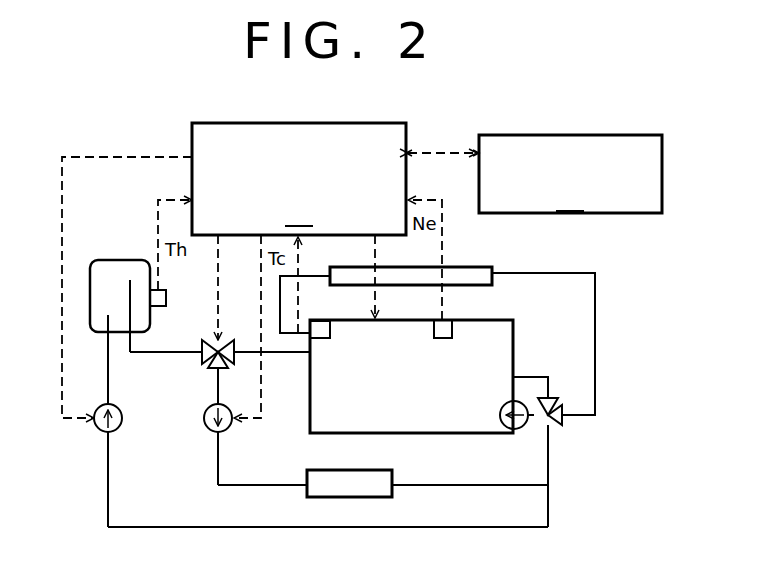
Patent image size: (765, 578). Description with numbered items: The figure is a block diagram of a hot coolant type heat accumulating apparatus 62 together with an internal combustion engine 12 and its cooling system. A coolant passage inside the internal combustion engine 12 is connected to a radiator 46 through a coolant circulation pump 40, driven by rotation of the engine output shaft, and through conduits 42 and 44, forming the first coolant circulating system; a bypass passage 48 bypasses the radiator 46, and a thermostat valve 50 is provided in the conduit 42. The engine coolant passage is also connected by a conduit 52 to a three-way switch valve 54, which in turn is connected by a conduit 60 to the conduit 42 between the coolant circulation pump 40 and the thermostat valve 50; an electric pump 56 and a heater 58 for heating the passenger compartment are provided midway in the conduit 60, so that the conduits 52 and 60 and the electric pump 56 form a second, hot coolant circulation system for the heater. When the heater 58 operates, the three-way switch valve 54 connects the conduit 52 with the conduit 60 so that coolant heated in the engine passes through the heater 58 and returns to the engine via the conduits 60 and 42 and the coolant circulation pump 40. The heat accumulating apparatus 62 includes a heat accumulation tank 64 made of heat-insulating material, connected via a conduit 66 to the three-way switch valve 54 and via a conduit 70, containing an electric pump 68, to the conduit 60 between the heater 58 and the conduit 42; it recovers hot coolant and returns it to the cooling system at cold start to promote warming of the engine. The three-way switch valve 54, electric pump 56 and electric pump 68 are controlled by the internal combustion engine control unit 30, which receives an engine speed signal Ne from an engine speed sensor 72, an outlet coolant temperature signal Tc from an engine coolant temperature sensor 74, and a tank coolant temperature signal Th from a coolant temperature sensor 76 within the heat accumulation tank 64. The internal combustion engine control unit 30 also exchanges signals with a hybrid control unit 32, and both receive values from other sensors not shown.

The internal combustion engine 12 is at (513, 340).
The internal combustion engine control unit 30 is at (299, 179).
The hybrid control unit 32 is at (570, 174).
The coolant circulation pump 40 is at (500, 415).
The conduit 42 is at (568, 273).
The conduit 44 is at (312, 278).
The radiator 46 is at (492, 267).
The bypass passage 48 is at (530, 377).
The thermostat valve 50 is at (556, 425).
The conduit 52 is at (290, 354).
The three-way switch valve 54 is at (205, 362).
The electric pump 56 is at (208, 430).
The heater 58 is at (375, 470).
The conduit 60 is at (253, 485).
The hot coolant type heat accumulating apparatus 62 is at (82, 305).
The heat accumulation tank 64 is at (123, 260).
The conduit 66 is at (163, 354).
The electric pump 68 is at (100, 430).
The conduit 70 is at (140, 527).
The engine speed sensor 72 is at (443, 338).
The engine coolant temperature sensor 74 is at (318, 338).
The coolant temperature sensor 76 is at (166, 300).